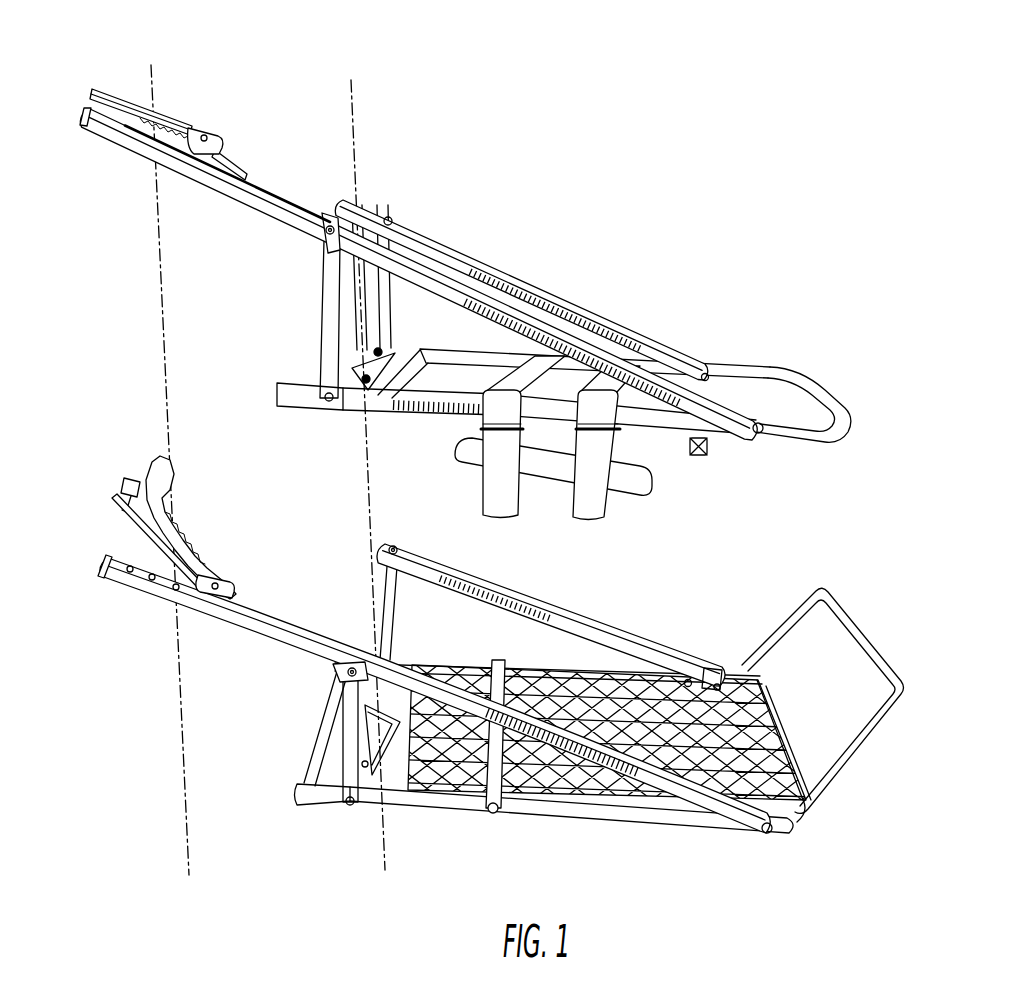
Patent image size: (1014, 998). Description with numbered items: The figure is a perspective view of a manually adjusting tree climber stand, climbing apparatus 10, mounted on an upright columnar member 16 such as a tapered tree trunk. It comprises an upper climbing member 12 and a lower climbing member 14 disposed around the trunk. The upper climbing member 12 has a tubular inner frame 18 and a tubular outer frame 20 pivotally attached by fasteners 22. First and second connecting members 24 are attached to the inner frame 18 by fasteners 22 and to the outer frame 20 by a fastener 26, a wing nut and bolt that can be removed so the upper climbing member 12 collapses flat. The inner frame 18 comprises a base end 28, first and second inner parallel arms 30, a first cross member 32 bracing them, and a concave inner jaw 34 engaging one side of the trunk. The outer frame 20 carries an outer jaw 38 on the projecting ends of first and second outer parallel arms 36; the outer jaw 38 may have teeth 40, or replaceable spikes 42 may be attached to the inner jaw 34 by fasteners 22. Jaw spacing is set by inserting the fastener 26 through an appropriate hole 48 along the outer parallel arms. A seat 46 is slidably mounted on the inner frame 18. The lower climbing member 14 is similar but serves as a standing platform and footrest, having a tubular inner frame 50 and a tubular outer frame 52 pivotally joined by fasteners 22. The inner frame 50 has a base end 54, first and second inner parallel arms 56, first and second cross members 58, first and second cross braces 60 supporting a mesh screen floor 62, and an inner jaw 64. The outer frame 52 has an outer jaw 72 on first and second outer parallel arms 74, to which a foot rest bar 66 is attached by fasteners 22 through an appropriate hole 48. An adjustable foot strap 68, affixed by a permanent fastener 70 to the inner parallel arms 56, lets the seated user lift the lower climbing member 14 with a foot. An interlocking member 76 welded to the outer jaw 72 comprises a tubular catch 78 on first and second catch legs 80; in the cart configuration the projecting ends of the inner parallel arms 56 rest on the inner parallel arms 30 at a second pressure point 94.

The climbing apparatus 10 is at (763, 117).
The upper climbing member 12 is at (593, 173).
The lower climbing member 14 is at (712, 598).
The upright columnar member 16 is at (313, 142).
The tubular inner frame 18 is at (757, 455).
The tubular outer frame 20 is at (605, 272).
The fastener 22 is at (380, 350).
The connecting member 24 is at (322, 335).
The fastener 26 is at (205, 136).
The base end 28 is at (807, 397).
The inner parallel arm 30 is at (750, 369).
The first cross member 32 is at (390, 380).
The inner jaw 34 is at (320, 378).
The outer parallel arm 36 is at (443, 247).
The outer jaw 38 is at (120, 97).
The serrations or teeth 40 is at (160, 127).
The replaceable spikes 42 is at (347, 755).
The seat 46 is at (623, 477).
The hole 48 is at (290, 197).
The tubular inner frame 50 is at (658, 840).
The tubular outer frame 52 is at (605, 600).
The base end 54 is at (788, 706).
The inner parallel arm 56 is at (223, 622).
The cross member 58 is at (481, 750).
The cross brace 60 is at (543, 667).
The mesh screen floor 62 is at (443, 663).
The inner jaw 64 is at (330, 783).
The foot rest bar 66 is at (853, 622).
The adjustable foot strap 68 is at (483, 773).
The permanent fastener 70 is at (493, 814).
The outer jaw 72 is at (150, 540).
The outer parallel arm 74 is at (264, 620).
The interlocking member 76 is at (127, 463).
The tubular catch 78 is at (153, 463).
The catch leg 80 is at (118, 488).
The second pressure point 94 is at (697, 458).